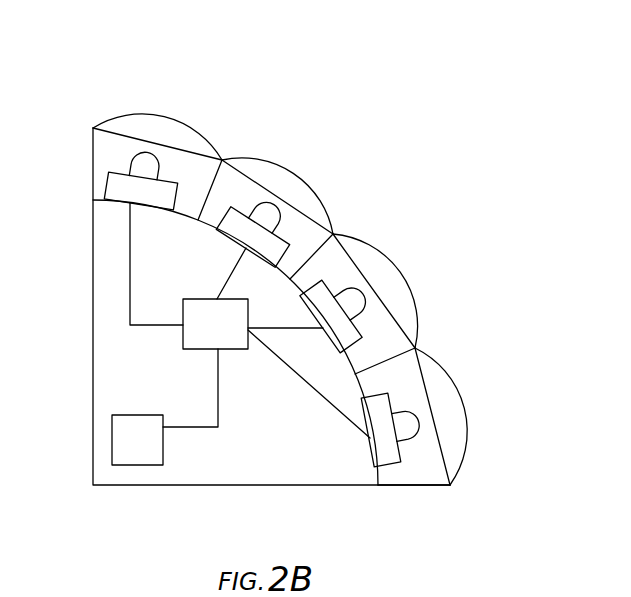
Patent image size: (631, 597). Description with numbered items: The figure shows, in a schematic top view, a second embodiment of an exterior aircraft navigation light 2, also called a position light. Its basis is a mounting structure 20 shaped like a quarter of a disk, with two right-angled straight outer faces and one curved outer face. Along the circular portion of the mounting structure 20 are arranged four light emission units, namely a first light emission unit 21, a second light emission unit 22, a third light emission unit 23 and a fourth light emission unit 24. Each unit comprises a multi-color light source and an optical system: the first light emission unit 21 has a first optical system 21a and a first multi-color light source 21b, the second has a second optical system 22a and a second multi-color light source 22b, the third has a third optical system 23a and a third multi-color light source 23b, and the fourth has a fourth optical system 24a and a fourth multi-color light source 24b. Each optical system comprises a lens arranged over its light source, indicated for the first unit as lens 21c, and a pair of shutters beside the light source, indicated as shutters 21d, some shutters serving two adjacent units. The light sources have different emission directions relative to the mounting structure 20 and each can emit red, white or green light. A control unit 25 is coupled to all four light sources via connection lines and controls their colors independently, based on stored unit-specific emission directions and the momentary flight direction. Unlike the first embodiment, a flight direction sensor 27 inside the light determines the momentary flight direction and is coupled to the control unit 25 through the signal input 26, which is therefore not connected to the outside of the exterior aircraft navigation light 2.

The exterior aircraft navigation light 2 is at (413, 85).
The mounting structure 20 is at (92, 352).
The first light emission unit 21 is at (490, 407).
The first optical system 21a is at (463, 460).
The first multi-color light source 21b is at (369, 443).
The lens 21c is at (457, 393).
The shutters 21d is at (398, 356).
The second light emission unit 22 is at (382, 210).
The second optical system 22a is at (402, 283).
The second multi-color light source 22b is at (320, 338).
The third light emission unit 23 is at (275, 113).
The third optical system 23a is at (298, 178).
The third multi-color light source 23b is at (221, 236).
The fourth light emission unit 24 is at (125, 97).
The fourth optical system 24a is at (162, 118).
The fourth multi-color light source 24b is at (92, 182).
The control unit 25 is at (183, 340).
The signal input 26 is at (218, 417).
The flight direction sensor 27 is at (163, 437).